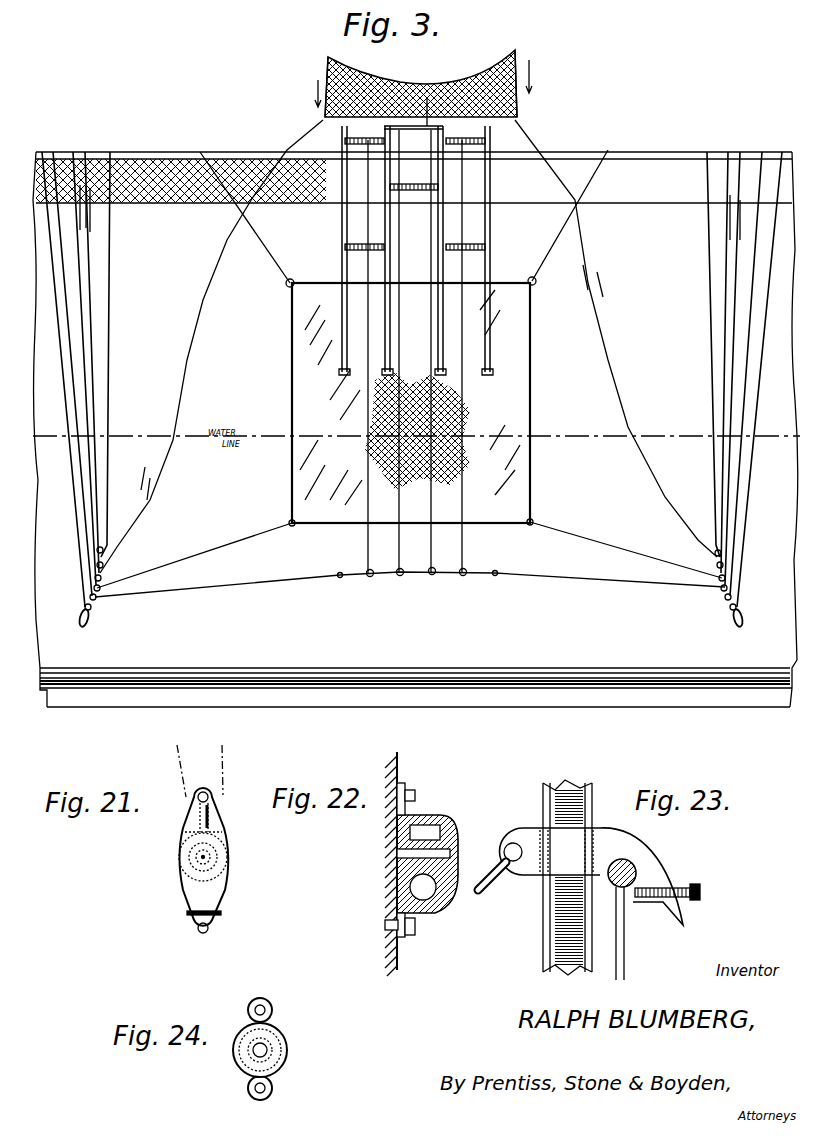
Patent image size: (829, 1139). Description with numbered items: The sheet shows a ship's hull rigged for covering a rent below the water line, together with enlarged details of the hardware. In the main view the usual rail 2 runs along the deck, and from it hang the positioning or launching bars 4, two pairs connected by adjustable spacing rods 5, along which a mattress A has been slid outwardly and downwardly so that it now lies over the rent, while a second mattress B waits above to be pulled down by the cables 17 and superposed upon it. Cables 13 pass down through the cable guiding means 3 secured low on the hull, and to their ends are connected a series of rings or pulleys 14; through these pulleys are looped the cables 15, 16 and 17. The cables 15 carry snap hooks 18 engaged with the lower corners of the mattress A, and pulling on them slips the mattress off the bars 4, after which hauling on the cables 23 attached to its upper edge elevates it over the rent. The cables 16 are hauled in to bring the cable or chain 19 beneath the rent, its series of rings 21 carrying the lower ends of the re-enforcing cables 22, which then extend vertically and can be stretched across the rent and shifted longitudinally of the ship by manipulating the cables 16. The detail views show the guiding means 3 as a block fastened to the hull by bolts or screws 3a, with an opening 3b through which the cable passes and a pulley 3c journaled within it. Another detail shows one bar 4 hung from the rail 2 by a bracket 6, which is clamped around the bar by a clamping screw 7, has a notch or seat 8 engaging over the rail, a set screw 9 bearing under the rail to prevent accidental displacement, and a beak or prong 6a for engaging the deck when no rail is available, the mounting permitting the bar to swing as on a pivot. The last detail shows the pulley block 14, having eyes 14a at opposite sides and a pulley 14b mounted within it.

In FIG. 3, the rail 2 is at (130, 152).
In FIG. 23, the rail 2 is at (670, 893).
In FIG. 3, the cable guiding means 3 is at (92, 618).
In FIG. 21, the cable guiding means 3 is at (195, 893).
In FIG. 22, the cable guiding means 3 is at (412, 821).
In FIG. 21, the bolts or screws 3a is at (187, 806).
In FIG. 22, the bolts or screws 3a is at (408, 790).
In FIG. 22, the opening 3b is at (423, 887).
In FIG. 21, the pulley 3c is at (215, 882).
In FIG. 22, the pulley 3c is at (397, 853).
In FIG. 3, the positioning or launching bars 4 is at (352, 244).
In FIG. 23, the positioning or launching bars 4 is at (580, 800).
In FIG. 3, the adjustable spacing rods 5 is at (427, 129).
In FIG. 23, the brackets 6 is at (603, 838).
In FIG. 23, the beak or prong 6a is at (684, 915).
In FIG. 23, the clamping screw 7 is at (513, 843).
In FIG. 23, the notch or seat 8 is at (638, 870).
In FIG. 23, the set screw 9 is at (630, 905).
In FIG. 3, the cables 13 is at (108, 362).
In FIG. 3, the rings or pulleys 14 is at (103, 553).
In FIG. 24, the rings or pulleys 14 is at (285, 1038).
In FIG. 24, the eyes 14a is at (304, 1001).
In FIG. 24, the pulley 14b is at (282, 1052).
In FIG. 3, the cables 15 is at (201, 554).
In FIG. 3, the cables 16 is at (216, 590).
In FIG. 3, the cables 17 is at (190, 362).
In FIG. 3, the snap hooks 18 is at (495, 577).
In FIG. 3, the cable or chain 19 is at (422, 578).
In FIG. 3, the rings 21 is at (376, 584).
In FIG. 3, the re-enforcing cables 22 is at (372, 564).
In FIG. 3, the cables 23 is at (282, 272).
In FIG. 3, the mattress A is at (530, 362).
In FIG. 3, the second mattress B is at (521, 104).